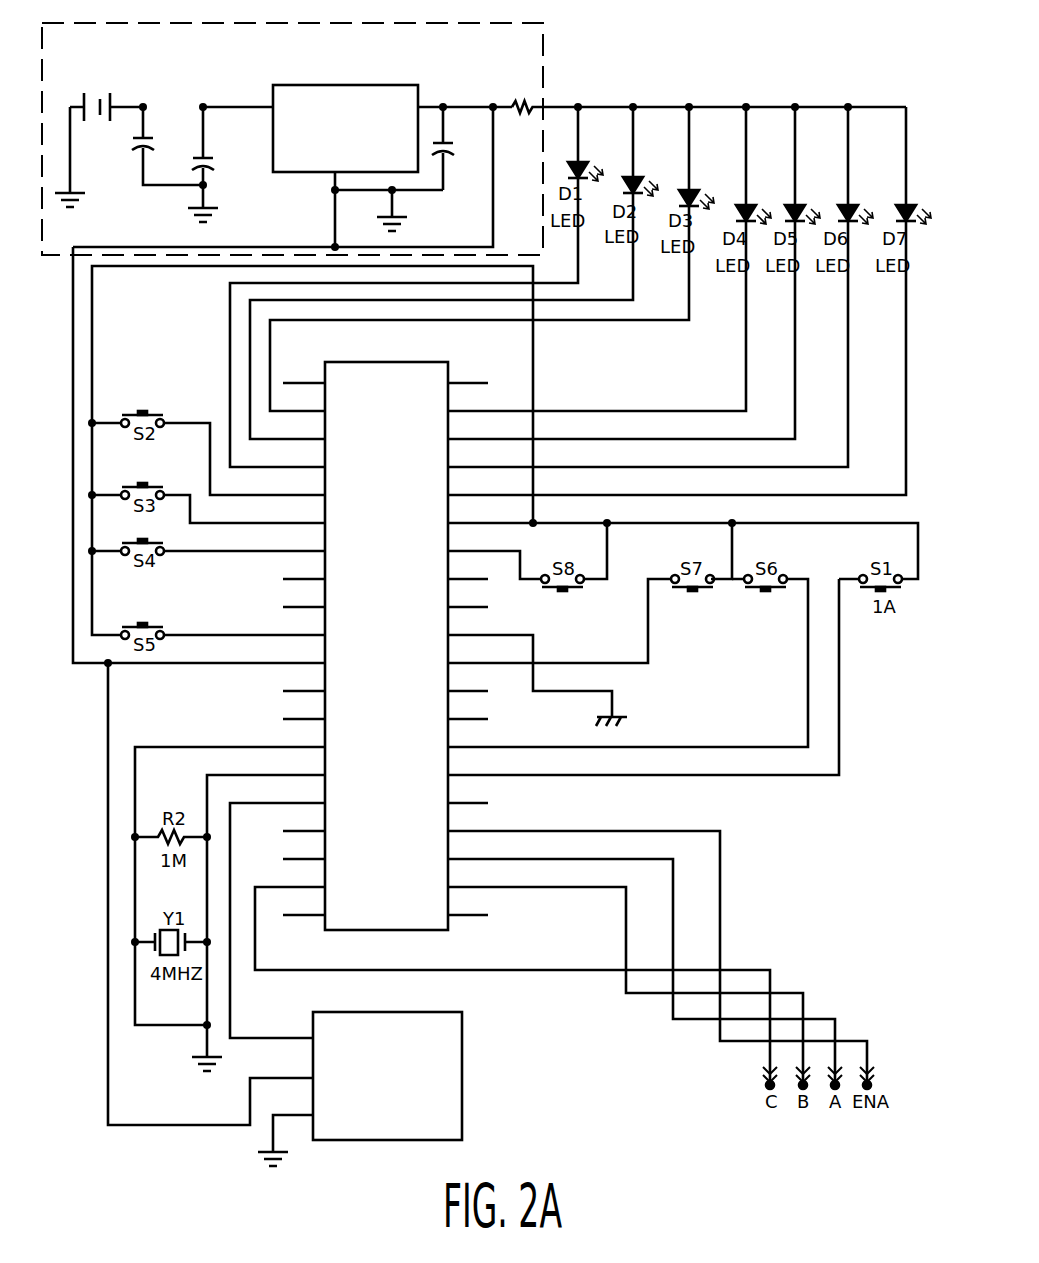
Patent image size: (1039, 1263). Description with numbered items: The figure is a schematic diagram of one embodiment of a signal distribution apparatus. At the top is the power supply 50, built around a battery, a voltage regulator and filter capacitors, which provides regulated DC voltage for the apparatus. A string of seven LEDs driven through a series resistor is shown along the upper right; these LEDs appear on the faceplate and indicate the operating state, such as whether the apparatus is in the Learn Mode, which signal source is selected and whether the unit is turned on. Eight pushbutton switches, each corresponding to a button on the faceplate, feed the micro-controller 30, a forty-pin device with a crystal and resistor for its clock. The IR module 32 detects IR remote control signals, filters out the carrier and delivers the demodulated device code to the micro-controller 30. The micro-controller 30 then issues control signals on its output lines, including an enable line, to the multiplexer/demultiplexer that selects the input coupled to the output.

The power supply 50 is at (543, 46).
The micro-controller 30 is at (435, 932).
The IR module 32 is at (462, 1040).